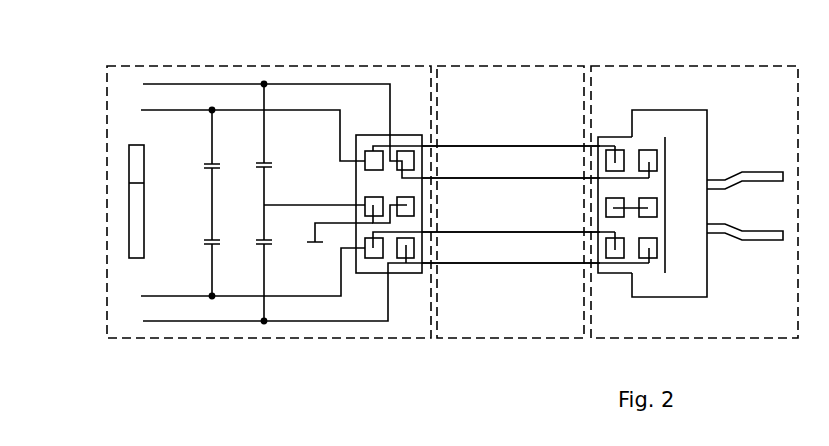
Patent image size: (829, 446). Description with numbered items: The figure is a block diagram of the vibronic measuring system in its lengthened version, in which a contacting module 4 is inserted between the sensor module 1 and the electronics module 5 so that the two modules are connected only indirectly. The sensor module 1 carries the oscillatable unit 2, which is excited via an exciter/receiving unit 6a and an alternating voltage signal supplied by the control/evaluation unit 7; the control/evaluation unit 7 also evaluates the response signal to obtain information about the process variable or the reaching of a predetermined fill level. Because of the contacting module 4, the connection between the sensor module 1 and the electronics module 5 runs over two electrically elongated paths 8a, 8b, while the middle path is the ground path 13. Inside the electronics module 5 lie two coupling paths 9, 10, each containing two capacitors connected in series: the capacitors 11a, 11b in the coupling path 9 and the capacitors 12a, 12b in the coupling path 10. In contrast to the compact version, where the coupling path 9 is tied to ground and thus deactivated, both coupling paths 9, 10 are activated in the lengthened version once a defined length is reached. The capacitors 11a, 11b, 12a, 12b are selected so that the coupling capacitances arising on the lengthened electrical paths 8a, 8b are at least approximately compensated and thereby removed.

The sensor module 1 is at (660, 65).
The oscillatable unit 2 is at (764, 241).
The contacting module 4 is at (498, 65).
The electronics module 5 is at (327, 65).
The exciter/receiving unit 6a is at (110, 88).
The control/evaluation unit 7 is at (136, 198).
The electrical path 8a is at (497, 135).
The electrical path 8b is at (493, 285).
The coupling path 9 is at (266, 134).
The coupling path 10 is at (212, 133).
The capacitor 11a is at (270, 165).
The capacitor 11b is at (270, 246).
The capacitor 12a is at (209, 169).
The capacitor 12b is at (209, 245).
The ground path 13 is at (343, 225).